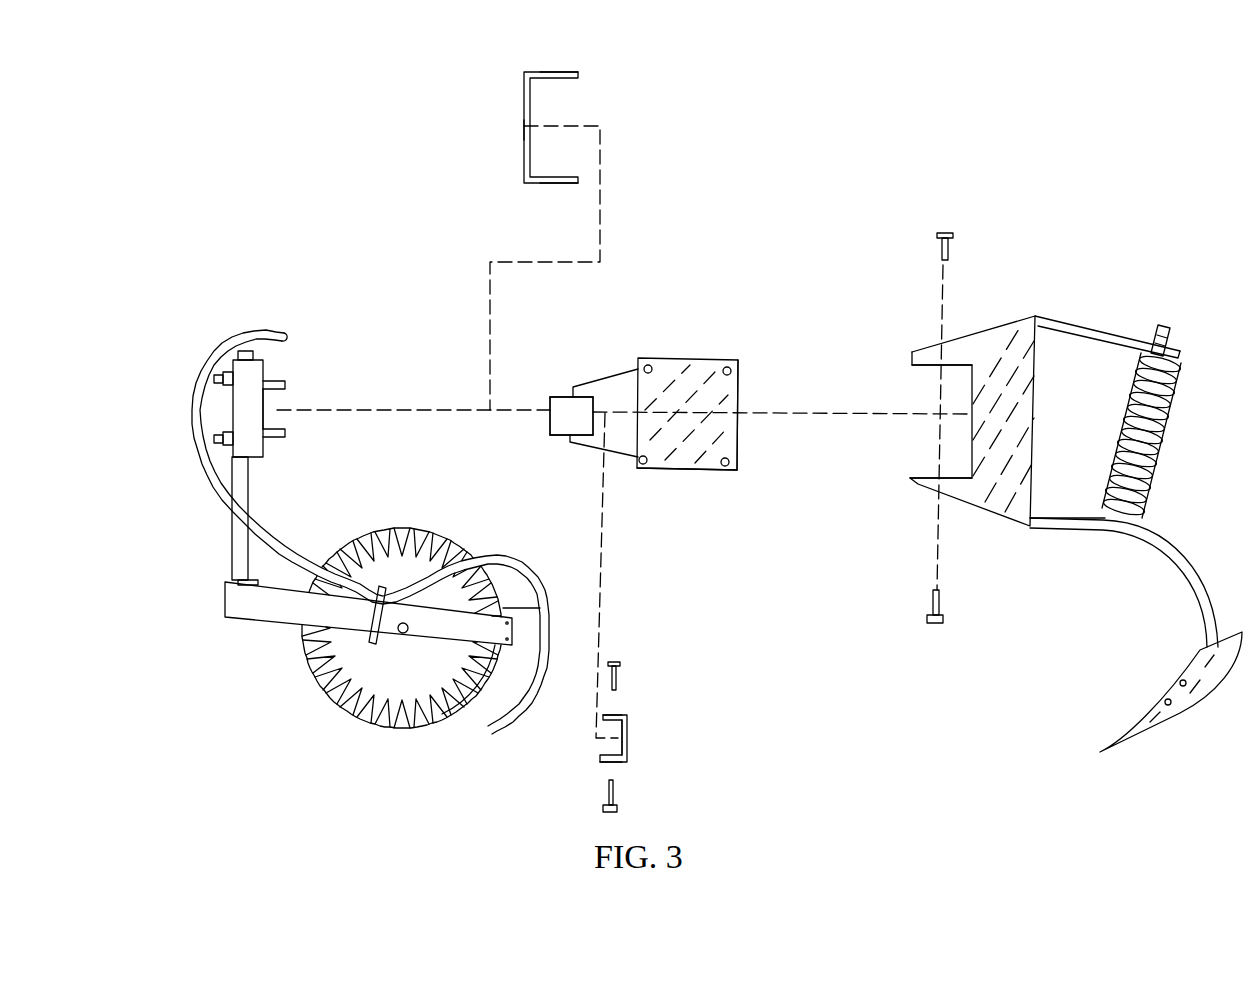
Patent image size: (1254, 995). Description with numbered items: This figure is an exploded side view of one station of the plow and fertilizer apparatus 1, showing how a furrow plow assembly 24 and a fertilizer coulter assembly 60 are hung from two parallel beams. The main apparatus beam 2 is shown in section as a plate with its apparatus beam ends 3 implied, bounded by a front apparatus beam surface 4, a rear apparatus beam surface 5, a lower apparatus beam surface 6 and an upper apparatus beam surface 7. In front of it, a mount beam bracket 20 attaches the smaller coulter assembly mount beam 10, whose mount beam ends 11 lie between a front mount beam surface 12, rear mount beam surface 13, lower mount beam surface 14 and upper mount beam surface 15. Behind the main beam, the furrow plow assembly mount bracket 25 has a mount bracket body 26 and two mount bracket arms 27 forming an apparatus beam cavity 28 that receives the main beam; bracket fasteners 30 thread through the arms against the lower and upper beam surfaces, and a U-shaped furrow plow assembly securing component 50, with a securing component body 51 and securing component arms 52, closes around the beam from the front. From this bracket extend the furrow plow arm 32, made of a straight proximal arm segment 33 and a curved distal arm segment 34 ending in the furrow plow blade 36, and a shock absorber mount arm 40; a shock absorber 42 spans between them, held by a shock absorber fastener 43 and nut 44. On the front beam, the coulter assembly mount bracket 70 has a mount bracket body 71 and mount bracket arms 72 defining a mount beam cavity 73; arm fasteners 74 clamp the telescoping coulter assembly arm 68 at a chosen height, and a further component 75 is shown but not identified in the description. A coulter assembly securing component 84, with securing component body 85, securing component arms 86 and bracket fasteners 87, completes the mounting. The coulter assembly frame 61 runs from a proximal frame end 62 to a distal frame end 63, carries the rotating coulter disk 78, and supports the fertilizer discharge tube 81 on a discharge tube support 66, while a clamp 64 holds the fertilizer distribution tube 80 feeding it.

The plow and fertilizer apparatus 1 is at (272, 128).
The main apparatus beam 2 is at (748, 390).
The apparatus beam ends 3 is at (675, 462).
The front apparatus beam surface 4 is at (637, 372).
The rear apparatus beam surface 5 is at (743, 433).
The lower apparatus beam surface 6 is at (710, 468).
The upper apparatus beam surface 7 is at (678, 357).
The coulter assembly mount beam 10 is at (545, 418).
The mount beam ends 11 is at (560, 433).
The front mount beam surface 12 is at (552, 407).
The rear mount beam surface 13 is at (612, 450).
The lower mount beam surface 14 is at (557, 425).
The upper mount beam surface 15 is at (563, 397).
The mount beam bracket 20 is at (620, 437).
The furrow plow assembly 24 is at (1053, 297).
The furrow plow assembly mount bracket 25 is at (995, 540).
The mount bracket body 26 is at (1017, 400).
The mount bracket arms 27 is at (933, 359).
The apparatus beam cavity 28 is at (940, 443).
The bracket fasteners 30 is at (937, 247).
The furrow plow arm 32 is at (1112, 533).
The proximal arm segment 33 is at (1055, 522).
The distal arm segment 34 is at (1185, 575).
The furrow plow blade 36 is at (1140, 728).
The shock absorber mount arm 40 is at (1087, 333).
The shock absorber 42 is at (1170, 402).
The shock absorber fastener 43 is at (1165, 330).
The nut 44 is at (1170, 340).
The furrow plow assembly securing component 50 is at (515, 134).
The securing component body 51 is at (525, 155).
The securing component arms 52 is at (577, 72).
The fertilizer coulter assembly 60 is at (198, 300).
The coulter assembly frame 61 is at (266, 632).
The proximal frame end 62 is at (223, 593).
The distal frame end 63 is at (543, 673).
The clamp 64 is at (373, 643).
The discharge tube support 66 is at (478, 708).
The coulter assembly arm 68 is at (232, 548).
The coulter assembly mount bracket 70 is at (277, 448).
The mount bracket body 71 is at (250, 399).
The mount bracket arms 72 is at (283, 381).
The mount beam cavity 73 is at (290, 398).
The arm fasteners 74 is at (220, 373).
The clamp band 75 is at (230, 377).
The coulter disk 78 is at (355, 707).
The fertilizer distribution tube 80 is at (278, 560).
The fertilizer discharge tube 81 is at (513, 707).
The coulter assembly securing component 84 is at (638, 731).
The securing component body 85 is at (627, 748).
The securing component arms 86 is at (617, 715).
The bracket fasteners 87 is at (620, 663).